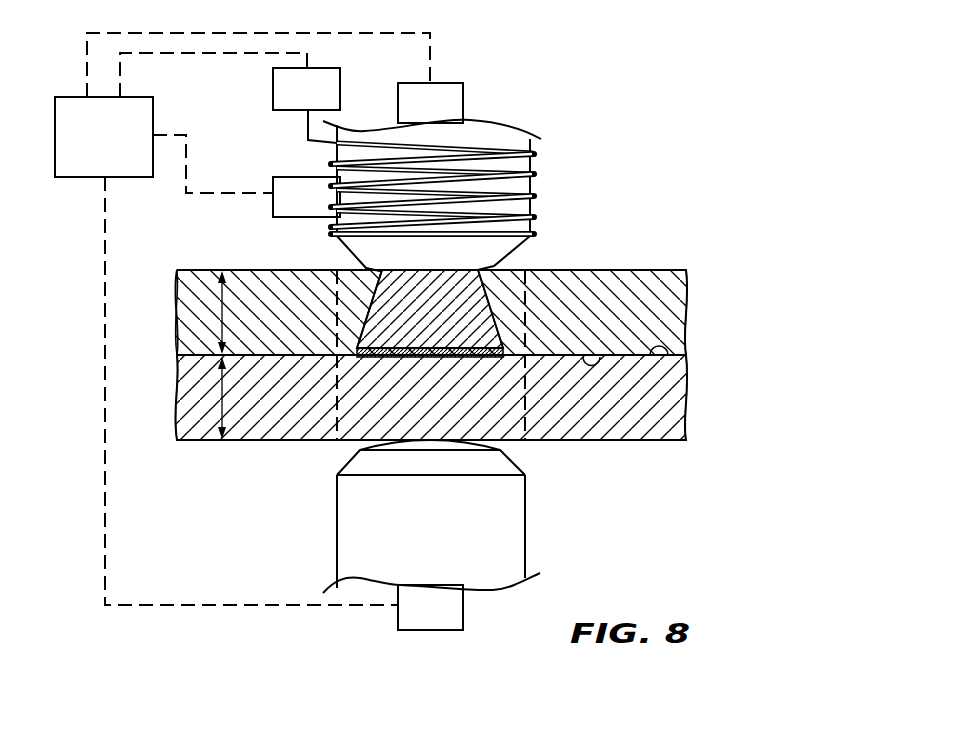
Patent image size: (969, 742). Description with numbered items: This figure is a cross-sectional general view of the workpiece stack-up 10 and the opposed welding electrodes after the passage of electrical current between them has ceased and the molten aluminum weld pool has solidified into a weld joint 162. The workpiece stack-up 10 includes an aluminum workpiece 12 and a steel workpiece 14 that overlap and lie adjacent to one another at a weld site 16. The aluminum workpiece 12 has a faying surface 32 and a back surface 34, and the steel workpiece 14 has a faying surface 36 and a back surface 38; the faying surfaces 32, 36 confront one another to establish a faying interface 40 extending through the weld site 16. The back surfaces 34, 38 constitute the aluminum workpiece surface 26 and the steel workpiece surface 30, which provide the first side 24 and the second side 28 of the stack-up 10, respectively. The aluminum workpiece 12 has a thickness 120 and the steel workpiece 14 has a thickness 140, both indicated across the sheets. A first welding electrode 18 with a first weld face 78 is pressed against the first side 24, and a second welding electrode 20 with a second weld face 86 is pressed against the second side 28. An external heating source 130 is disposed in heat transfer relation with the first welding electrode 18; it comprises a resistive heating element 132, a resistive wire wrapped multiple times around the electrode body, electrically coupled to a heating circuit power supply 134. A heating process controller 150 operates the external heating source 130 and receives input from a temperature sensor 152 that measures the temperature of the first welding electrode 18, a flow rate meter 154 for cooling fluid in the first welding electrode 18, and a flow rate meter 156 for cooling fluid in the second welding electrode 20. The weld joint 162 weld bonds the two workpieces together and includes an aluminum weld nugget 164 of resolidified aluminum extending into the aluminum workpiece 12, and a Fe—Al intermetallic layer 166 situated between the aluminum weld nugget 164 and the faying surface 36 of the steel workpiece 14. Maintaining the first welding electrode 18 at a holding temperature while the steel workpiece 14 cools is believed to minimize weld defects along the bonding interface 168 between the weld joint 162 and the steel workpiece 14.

The workpiece stack-up 10 is at (484, 357).
The aluminum workpiece 12 is at (686, 307).
The steel workpiece 14 is at (670, 402).
The weld site 16 is at (333, 427).
The first welding electrode 18 is at (402, 187).
The second welding electrode 20 is at (383, 475).
The first side 24 is at (609, 256).
The aluminum workpiece surface 26 is at (551, 268).
The second side 28 is at (563, 449).
The steel workpiece surface 30 is at (538, 441).
The faying surface of the aluminum workpiece 32 is at (600, 356).
The back surface of the aluminum workpiece 34 is at (645, 268).
The faying surface of the steel workpiece 36 is at (684, 362).
The back surface of the steel workpiece 38 is at (641, 442).
The faying interface 40 is at (522, 368).
The first weld face 78 is at (382, 275).
The second weld face 86 is at (402, 435).
The thickness of the aluminum workpiece 120 is at (238, 324).
The external heating source 130 is at (478, 158).
The resistive heating element 132 is at (507, 167).
The heating circuit power supply 134 is at (327, 102).
The thickness of the steel workpiece 140 is at (238, 412).
The heating process controller 150 is at (242, 319).
The temperature sensor 152 is at (325, 207).
The flow rate meter 154 is at (450, 116).
The flow rate meter 156 is at (450, 621).
The weld joint 162 is at (448, 317).
The aluminum weld nugget 164 is at (430, 300).
The Fe—Al intermetallic layer 166 is at (427, 357).
The bonding interface 168 is at (402, 353).